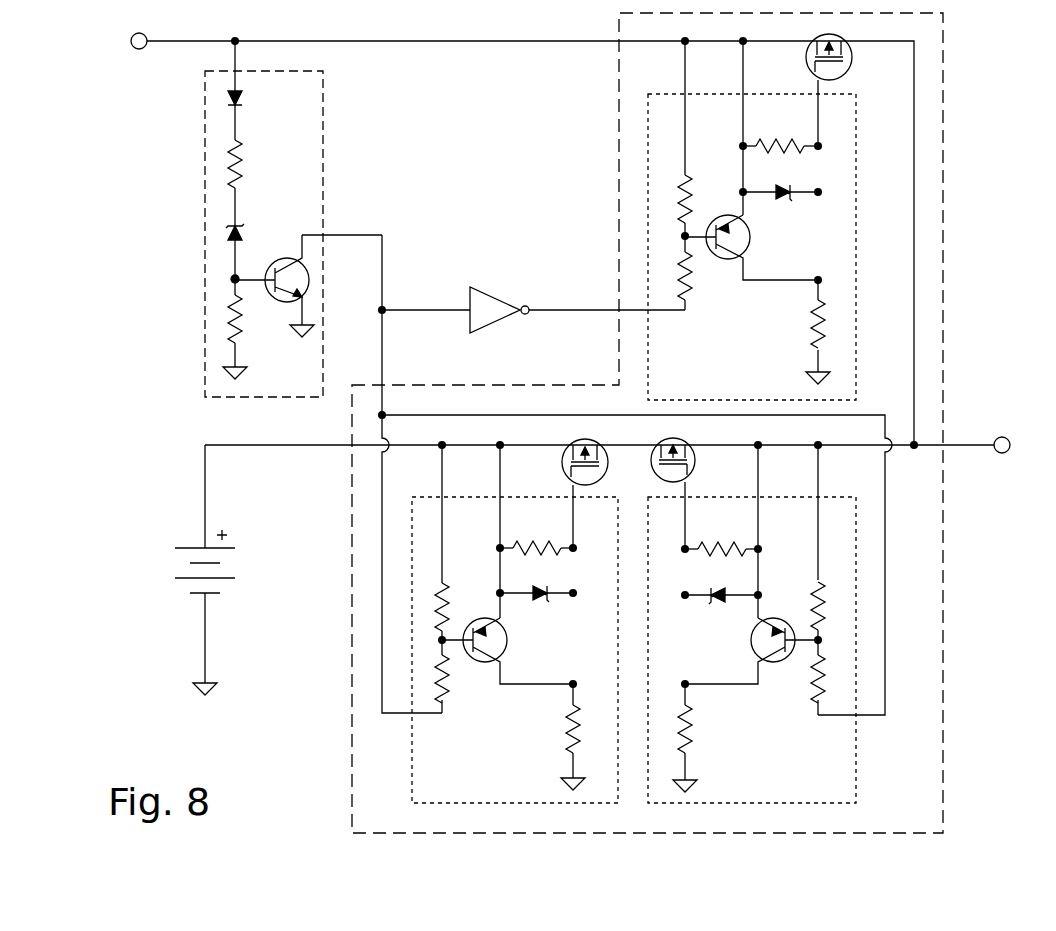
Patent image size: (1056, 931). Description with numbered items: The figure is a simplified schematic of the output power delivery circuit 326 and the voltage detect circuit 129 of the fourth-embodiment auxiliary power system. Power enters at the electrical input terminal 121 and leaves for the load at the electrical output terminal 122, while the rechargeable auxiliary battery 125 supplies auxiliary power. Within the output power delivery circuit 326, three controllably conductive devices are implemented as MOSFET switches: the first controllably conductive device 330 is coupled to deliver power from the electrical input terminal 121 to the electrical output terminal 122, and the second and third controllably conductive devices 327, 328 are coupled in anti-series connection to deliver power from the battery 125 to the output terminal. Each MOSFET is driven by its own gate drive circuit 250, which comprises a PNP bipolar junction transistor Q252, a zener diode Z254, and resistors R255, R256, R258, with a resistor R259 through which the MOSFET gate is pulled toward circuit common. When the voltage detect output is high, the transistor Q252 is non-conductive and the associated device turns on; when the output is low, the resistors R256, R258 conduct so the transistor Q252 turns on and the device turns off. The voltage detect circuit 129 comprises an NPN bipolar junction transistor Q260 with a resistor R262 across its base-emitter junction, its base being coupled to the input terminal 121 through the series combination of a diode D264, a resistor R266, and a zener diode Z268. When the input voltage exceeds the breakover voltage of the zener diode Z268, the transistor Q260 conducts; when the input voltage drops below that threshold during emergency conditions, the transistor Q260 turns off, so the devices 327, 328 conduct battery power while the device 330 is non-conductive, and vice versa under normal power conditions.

The electrical input terminal 121 is at (139, 49).
The electrical output terminal 122 is at (1005, 453).
The rechargeable auxiliary battery 125 is at (228, 580).
The voltage detect circuit 129 is at (323, 142).
The output power delivery circuit 326 is at (943, 300).
The gate drive circuit 250 is at (856, 310).
The second controllably conductive device 327 is at (696, 455).
The third controllably conductive device 328 is at (562, 455).
The first controllably conductive device 330 is at (806, 50).
The diode D264 is at (240, 100).
The resistor R266 is at (240, 175).
The zener diode Z268 is at (240, 235).
The NPN bipolar junction transistor Q260 is at (272, 300).
The resistor R262 is at (238, 338).
The resistor R255 is at (784, 141).
The resistor R256 is at (690, 190).
The resistor R258 is at (690, 290).
The resistor R259 is at (808, 326).
The zener diode Z254 is at (782, 200).
The PNP bipolar junction transistor Q252 is at (720, 260).